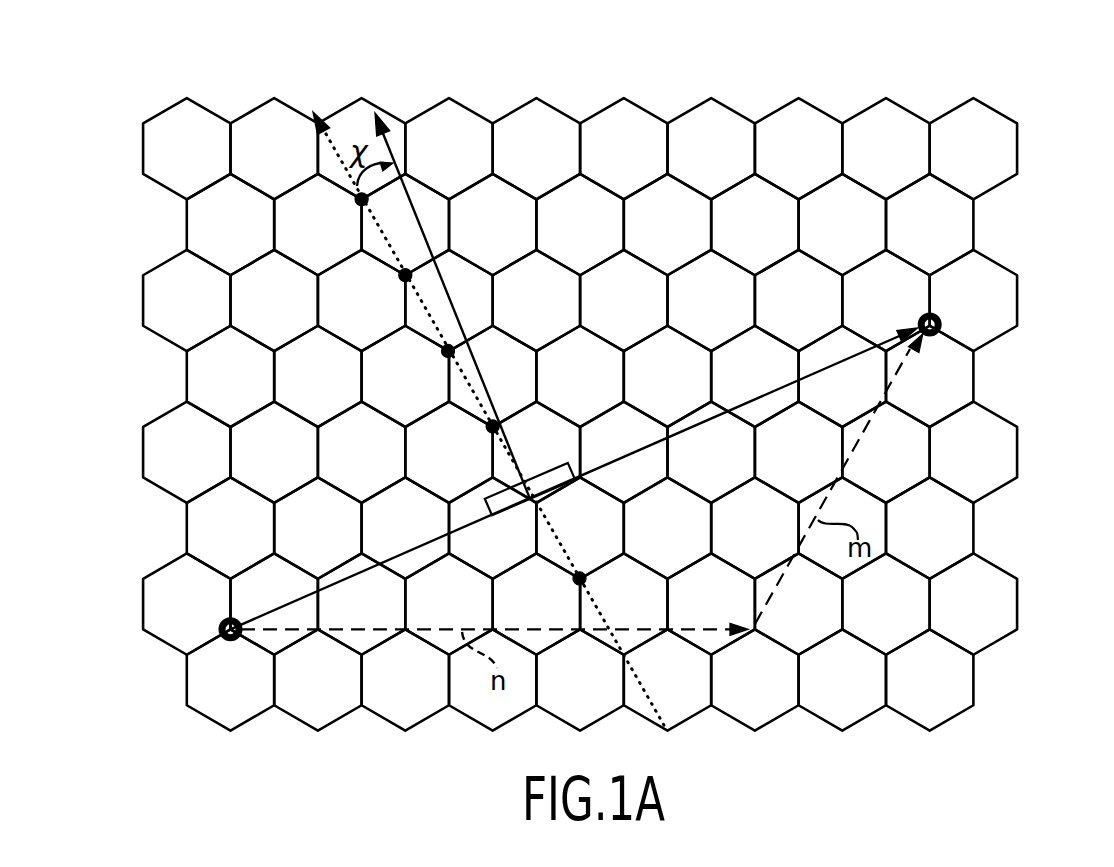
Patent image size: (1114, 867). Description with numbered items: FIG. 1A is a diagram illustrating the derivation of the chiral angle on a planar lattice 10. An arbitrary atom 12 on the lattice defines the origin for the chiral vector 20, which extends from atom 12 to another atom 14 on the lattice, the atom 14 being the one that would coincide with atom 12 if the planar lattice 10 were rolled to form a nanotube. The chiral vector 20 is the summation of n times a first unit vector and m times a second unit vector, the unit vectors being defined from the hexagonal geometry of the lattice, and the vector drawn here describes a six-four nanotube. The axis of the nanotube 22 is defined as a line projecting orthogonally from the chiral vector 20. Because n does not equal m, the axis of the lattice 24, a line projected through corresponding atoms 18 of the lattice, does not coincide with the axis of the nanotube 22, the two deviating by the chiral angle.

The planar lattice 10 is at (1017, 463).
The atom 12 is at (222, 641).
The atom 14 is at (942, 320).
The corresponding atoms 18 is at (400, 282).
The chiral vector 20 is at (770, 392).
The axis of the nanotube 22 is at (415, 213).
The axis of the lattice 24 is at (337, 163).